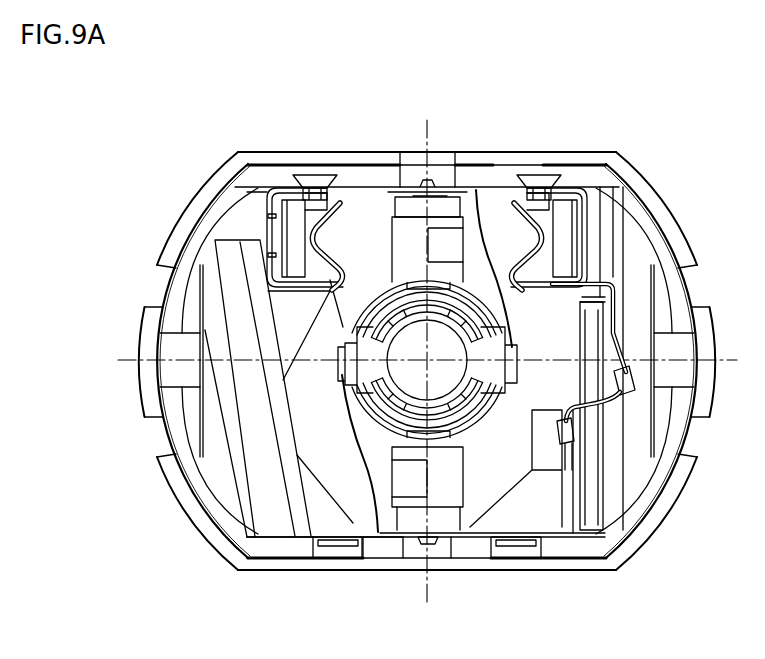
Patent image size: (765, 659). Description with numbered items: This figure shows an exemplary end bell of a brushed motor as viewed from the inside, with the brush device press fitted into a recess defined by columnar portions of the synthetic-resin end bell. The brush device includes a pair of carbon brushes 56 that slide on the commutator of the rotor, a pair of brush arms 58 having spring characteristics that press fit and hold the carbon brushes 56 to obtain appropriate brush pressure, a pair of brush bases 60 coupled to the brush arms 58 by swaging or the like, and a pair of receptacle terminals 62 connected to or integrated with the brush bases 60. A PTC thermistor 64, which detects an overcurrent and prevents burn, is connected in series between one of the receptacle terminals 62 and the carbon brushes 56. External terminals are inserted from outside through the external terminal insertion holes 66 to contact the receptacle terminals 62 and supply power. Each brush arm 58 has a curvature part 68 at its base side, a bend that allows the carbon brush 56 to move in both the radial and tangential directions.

The carbon brush 56 is at (365, 369).
The brush arm 58 is at (483, 235).
The brush base 60 is at (348, 187).
The receptacle terminal 62 is at (553, 227).
The PTC (positive temperature coefficient thermistor) 64 is at (593, 500).
The external terminal insertion hole 66 is at (315, 186).
The curvature part 68 is at (377, 548).